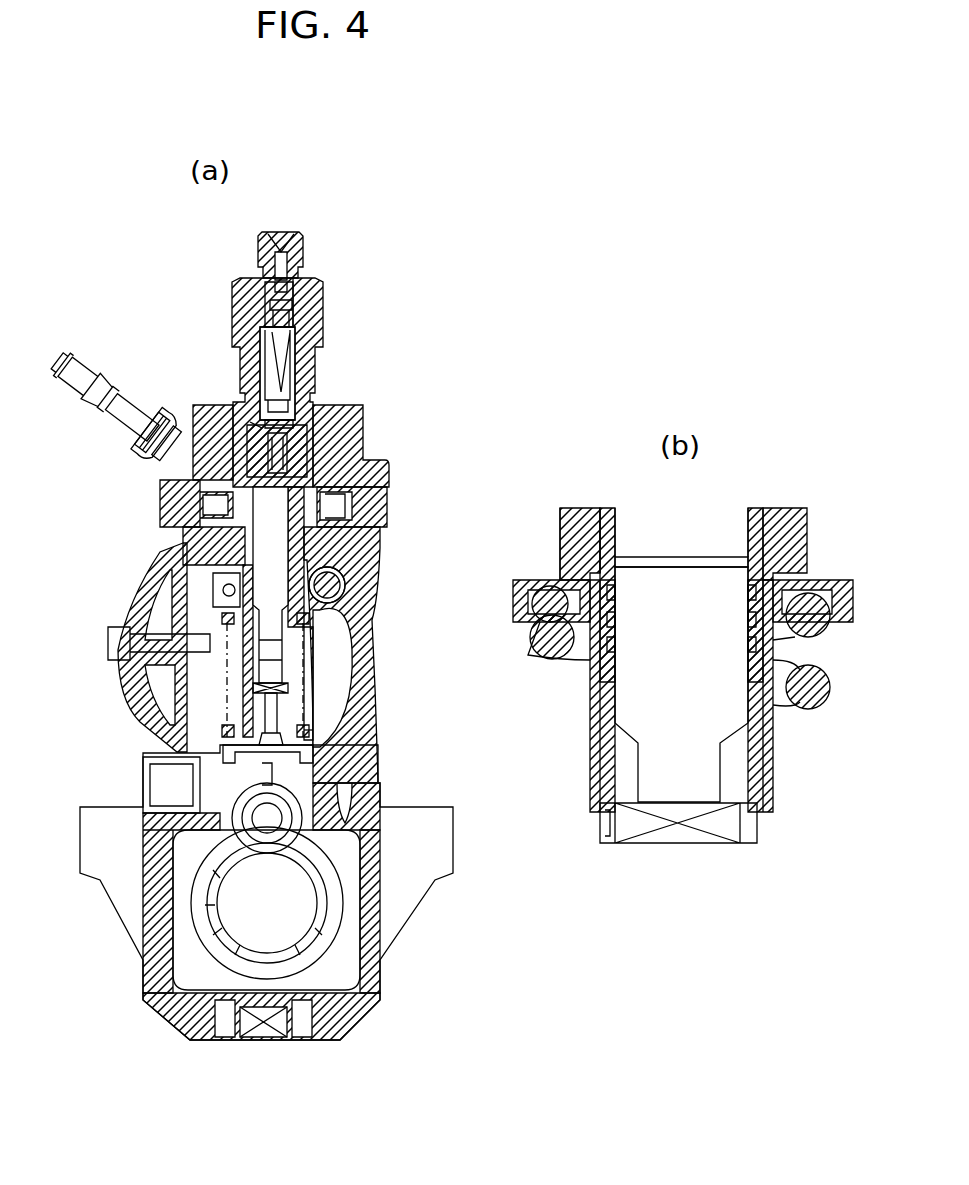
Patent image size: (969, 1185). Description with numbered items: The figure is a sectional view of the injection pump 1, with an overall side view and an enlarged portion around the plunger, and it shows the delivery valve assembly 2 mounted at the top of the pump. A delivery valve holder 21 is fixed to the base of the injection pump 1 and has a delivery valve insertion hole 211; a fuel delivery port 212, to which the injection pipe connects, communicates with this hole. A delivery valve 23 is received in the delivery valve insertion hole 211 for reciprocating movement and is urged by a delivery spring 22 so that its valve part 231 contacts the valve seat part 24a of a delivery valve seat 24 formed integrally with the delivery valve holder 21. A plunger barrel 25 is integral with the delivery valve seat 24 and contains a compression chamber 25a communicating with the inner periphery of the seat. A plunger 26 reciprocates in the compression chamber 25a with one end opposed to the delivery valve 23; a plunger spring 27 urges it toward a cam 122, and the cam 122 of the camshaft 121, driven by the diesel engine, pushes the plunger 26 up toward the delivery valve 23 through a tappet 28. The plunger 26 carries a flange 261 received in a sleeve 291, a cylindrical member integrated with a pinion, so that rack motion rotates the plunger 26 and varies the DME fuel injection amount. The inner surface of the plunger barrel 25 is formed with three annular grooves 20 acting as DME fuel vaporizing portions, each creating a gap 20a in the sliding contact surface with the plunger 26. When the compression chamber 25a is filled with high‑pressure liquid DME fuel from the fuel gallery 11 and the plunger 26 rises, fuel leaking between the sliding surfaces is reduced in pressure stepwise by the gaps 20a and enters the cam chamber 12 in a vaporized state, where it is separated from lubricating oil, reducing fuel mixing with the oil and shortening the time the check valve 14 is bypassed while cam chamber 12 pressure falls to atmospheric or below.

The injection pump 1 is at (413, 336).
The delivery valve assembly 2 is at (219, 301).
The fuel gallery 11 is at (387, 512).
The cam chamber 12 is at (183, 842).
The check valve 14 is at (345, 590).
The annular groove 20 is at (598, 560).
The gap 20a is at (770, 582).
The delivery valve holder 21 is at (300, 257).
The delivery spring 22 is at (272, 372).
The delivery valve 23 is at (345, 431).
The delivery valve seat 24 is at (300, 428).
The valve seat part 24a is at (262, 426).
The plunger barrel 25 is at (790, 530).
The compression chamber 25a is at (160, 521).
The plunger 26 is at (630, 702).
The plunger spring 27 is at (825, 690).
The tappet 28 is at (307, 771).
The camshaft 121 is at (250, 902).
The cam 122 is at (330, 927).
The delivery valve insertion hole 211 is at (295, 405).
The fuel delivery port 212 is at (285, 236).
The valve part 231 is at (240, 410).
The flange 261 is at (775, 815).
The sleeve 291 is at (775, 745).